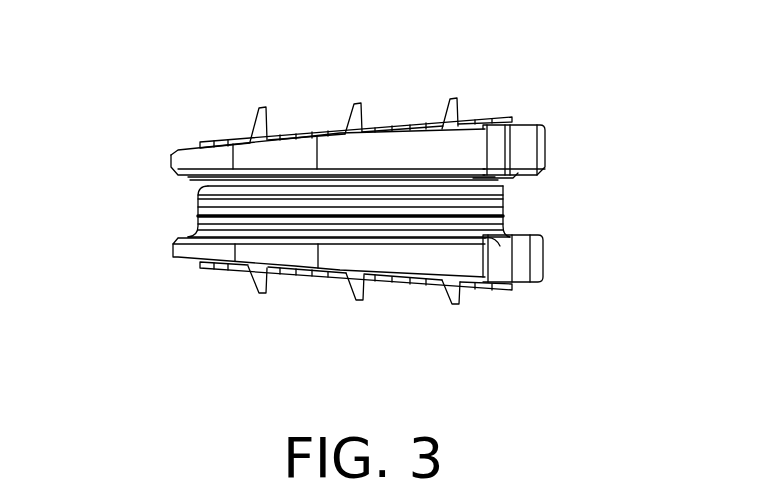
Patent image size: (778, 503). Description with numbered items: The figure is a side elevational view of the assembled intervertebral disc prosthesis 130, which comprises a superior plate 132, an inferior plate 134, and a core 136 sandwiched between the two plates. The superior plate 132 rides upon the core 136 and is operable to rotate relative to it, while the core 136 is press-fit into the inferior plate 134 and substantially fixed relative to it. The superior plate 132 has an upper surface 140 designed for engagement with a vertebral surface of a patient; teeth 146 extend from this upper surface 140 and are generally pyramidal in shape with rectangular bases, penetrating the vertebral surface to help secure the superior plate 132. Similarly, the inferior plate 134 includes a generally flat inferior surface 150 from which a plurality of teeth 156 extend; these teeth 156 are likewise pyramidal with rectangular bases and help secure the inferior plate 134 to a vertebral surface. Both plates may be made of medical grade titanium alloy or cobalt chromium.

The intervertebral disc prosthesis 130 is at (568, 108).
The superior plate 132 is at (418, 148).
The inferior plate 134 is at (422, 253).
The core 136 is at (212, 205).
The upper surface 140 is at (179, 151).
The teeth 146 is at (257, 118).
The inferior surface 150 is at (182, 262).
The teeth 156 is at (259, 277).